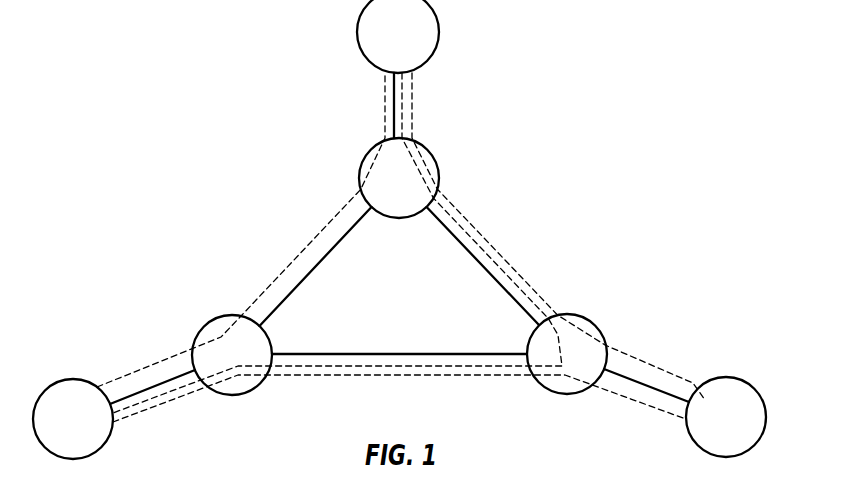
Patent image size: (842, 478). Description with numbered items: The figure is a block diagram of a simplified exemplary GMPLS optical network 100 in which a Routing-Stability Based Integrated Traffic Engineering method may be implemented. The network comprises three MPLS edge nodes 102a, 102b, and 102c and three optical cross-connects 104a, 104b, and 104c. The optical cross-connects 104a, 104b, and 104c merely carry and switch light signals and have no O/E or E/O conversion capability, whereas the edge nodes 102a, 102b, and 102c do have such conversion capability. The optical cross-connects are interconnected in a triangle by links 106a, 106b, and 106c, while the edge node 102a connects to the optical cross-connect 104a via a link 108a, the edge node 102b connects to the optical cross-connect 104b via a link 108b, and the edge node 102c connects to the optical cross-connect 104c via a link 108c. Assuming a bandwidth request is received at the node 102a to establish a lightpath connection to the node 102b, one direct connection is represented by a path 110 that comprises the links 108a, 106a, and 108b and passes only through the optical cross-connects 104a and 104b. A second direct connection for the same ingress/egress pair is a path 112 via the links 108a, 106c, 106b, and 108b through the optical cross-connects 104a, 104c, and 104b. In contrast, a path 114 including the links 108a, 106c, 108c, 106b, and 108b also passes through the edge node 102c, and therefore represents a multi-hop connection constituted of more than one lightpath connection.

The GMPLS optical network 100 is at (143, 108).
The MPLS edge node 102a is at (100, 431).
The MPLS edge node 102b is at (425, 45).
The MPLS edge node 102c is at (750, 430).
The optical cross-connect 104a is at (257, 368).
The optical cross-connect 104b is at (425, 188).
The optical cross-connect 104c is at (592, 365).
The link 106a is at (343, 237).
The link 106b is at (487, 270).
The link 106c is at (343, 354).
The link 108a is at (145, 389).
The link 108b is at (394, 124).
The link 108c is at (632, 378).
The path 110 is at (147, 364).
The path 112 is at (442, 366).
The path 114 is at (340, 375).